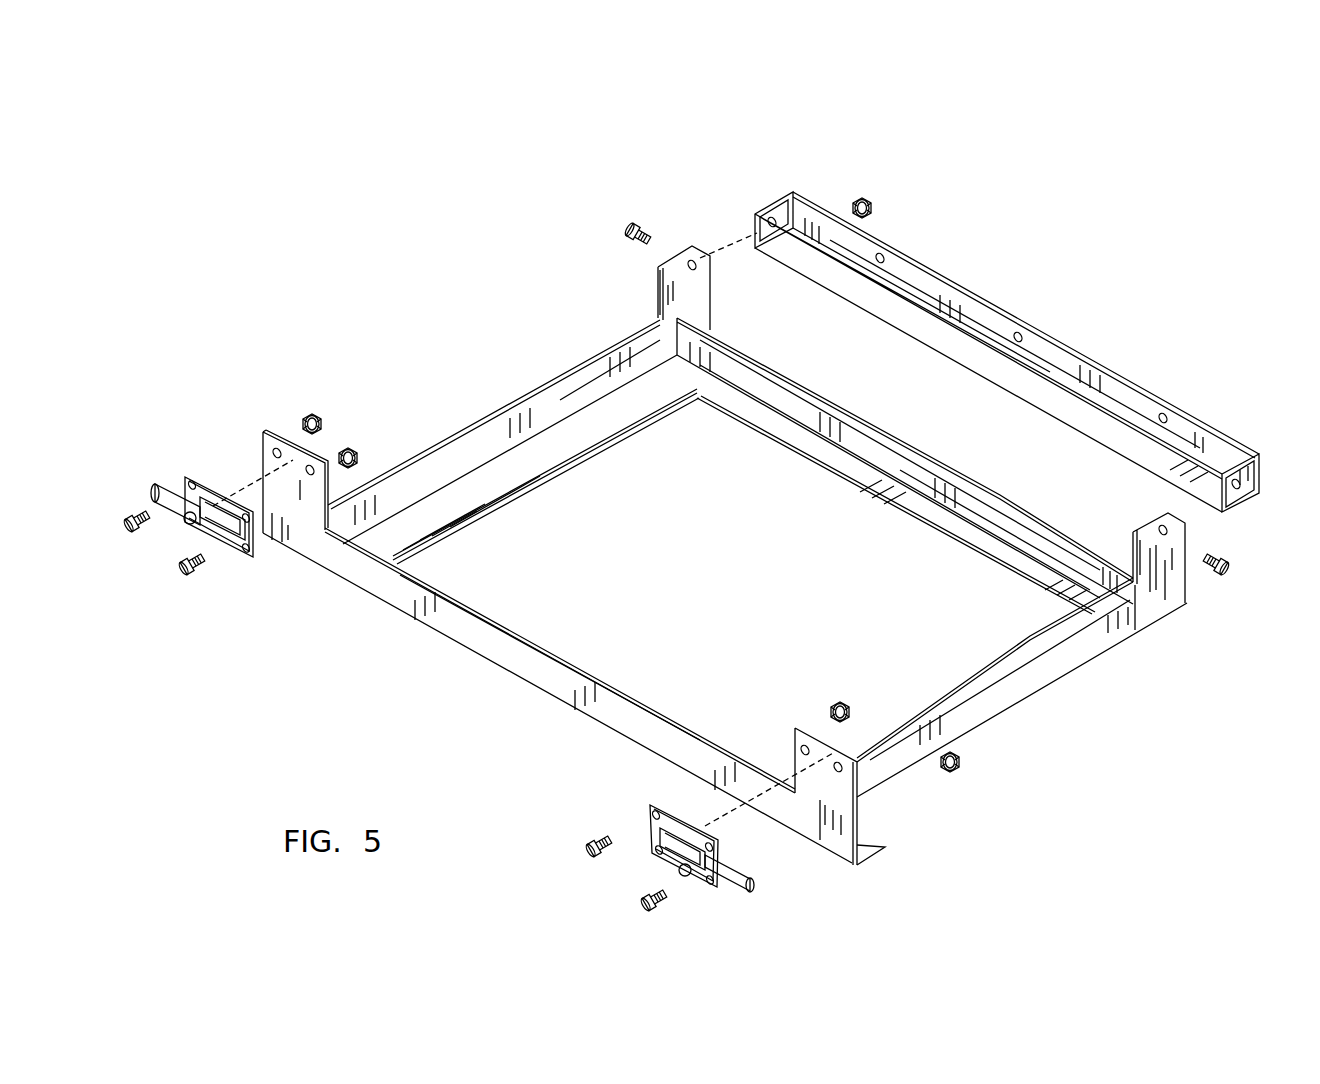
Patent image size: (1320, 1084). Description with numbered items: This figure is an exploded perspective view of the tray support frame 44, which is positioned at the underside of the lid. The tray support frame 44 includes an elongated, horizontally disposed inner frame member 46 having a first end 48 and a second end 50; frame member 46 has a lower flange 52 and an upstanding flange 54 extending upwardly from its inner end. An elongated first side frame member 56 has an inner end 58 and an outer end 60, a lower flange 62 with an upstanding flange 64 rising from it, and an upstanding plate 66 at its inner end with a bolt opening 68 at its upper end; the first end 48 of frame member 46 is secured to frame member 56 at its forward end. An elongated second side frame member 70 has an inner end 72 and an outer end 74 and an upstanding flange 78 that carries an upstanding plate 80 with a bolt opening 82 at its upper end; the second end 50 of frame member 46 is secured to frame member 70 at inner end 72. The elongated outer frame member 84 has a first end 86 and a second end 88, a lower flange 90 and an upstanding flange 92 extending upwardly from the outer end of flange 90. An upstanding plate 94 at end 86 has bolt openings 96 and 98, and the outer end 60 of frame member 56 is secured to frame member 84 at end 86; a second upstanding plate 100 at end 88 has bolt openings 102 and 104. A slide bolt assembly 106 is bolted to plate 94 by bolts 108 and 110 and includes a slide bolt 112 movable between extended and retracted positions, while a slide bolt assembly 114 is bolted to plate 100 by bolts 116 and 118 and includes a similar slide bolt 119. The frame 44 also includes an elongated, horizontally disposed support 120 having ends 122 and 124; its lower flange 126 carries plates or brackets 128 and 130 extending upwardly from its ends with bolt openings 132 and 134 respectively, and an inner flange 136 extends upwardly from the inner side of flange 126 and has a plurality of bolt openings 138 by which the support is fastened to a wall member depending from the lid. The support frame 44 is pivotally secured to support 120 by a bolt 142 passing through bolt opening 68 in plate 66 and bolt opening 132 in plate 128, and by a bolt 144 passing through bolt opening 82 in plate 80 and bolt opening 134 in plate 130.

The tray support frame 44 is at (734, 543).
The inner frame member 46 is at (900, 440).
The first end 48 is at (700, 330).
The second end 50 is at (1105, 560).
The lower flange 52 is at (875, 485).
The upstanding flange 54 is at (965, 490).
The first side frame member 56 is at (500, 400).
The inner end 58 is at (712, 318).
The outer end 60 is at (410, 497).
The lower flange 62 is at (548, 455).
The upstanding flange 64 is at (600, 390).
The upstanding plate 66 is at (662, 288).
The bolt opening 68 is at (688, 260).
The second side frame member 70 is at (1027, 635).
The inner end 72 is at (1193, 603).
The outer end 74 is at (865, 782).
The upstanding flange 78 is at (1133, 622).
The upstanding plate 80 is at (1170, 553).
The bolt opening 82 is at (1145, 560).
The outer frame member 84 is at (578, 658).
The first end 86 is at (266, 540).
The second end 88 is at (862, 858).
The lower flange 90 is at (877, 840).
The upstanding flange 92 is at (648, 742).
The upstanding plate 94 is at (296, 473).
The bolt opening 96 is at (279, 446).
The bolt opening 98 is at (311, 477).
The upstanding plate 100 is at (832, 797).
The bolt opening 102 is at (803, 745).
The bolt opening 104 is at (843, 765).
The slide bolt assembly 106 is at (200, 468).
The bolt 108 is at (133, 538).
The bolt 110 is at (190, 580).
The slide bolt 112 is at (153, 486).
The slide bolt assembly 114 is at (665, 803).
The bolt 116 is at (596, 840).
The bolt 118 is at (643, 903).
The latch bolt rod 119 is at (725, 875).
The support 120 is at (1056, 318).
The end 122 is at (752, 210).
The end 124 is at (1265, 470).
The lower flange 126 is at (945, 333).
The plate or bracket 128 is at (803, 212).
The plate or bracket 130 is at (1225, 470).
The bolt opening 132 is at (778, 226).
The bolt opening 134 is at (1158, 415).
The inner flange 136 is at (1105, 385).
The bolt openings 138 is at (888, 262).
The bolt 142 is at (627, 230).
The bolt 144 is at (1222, 574).